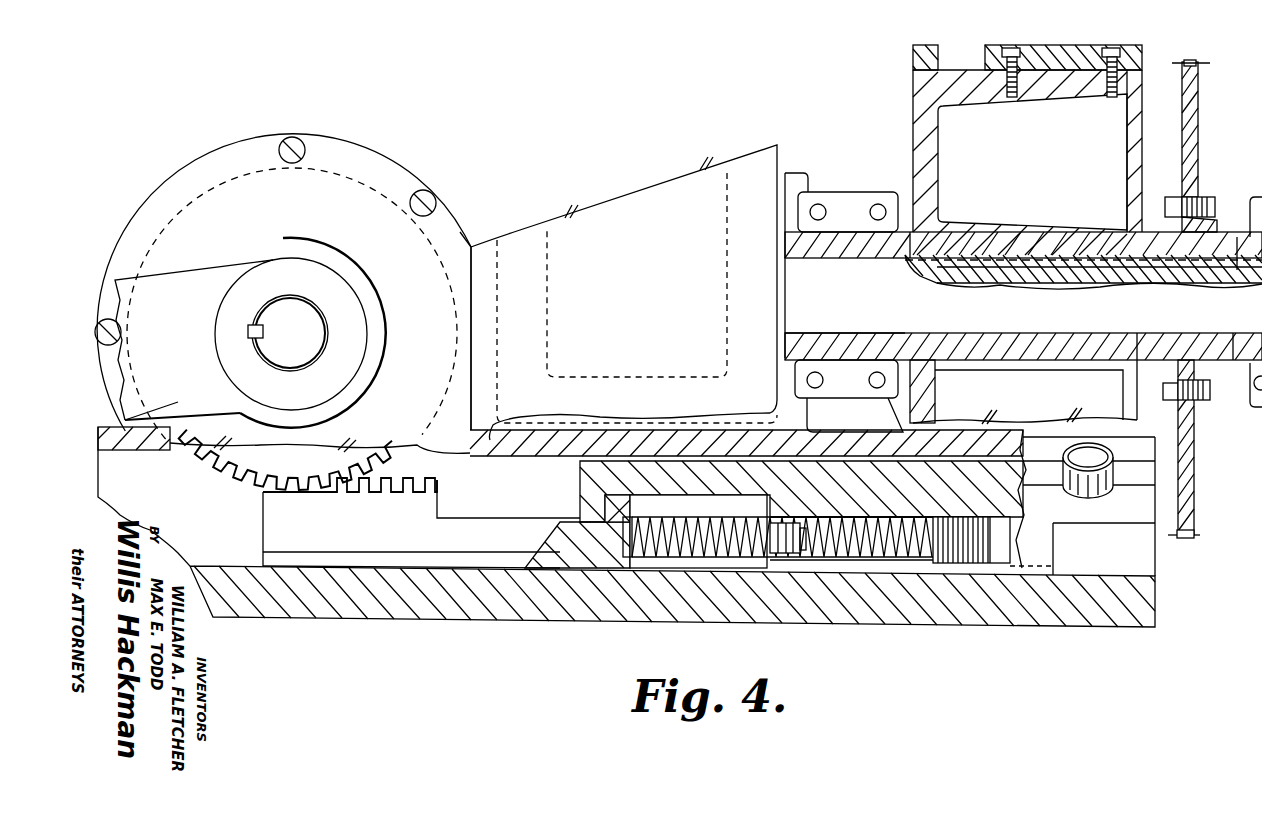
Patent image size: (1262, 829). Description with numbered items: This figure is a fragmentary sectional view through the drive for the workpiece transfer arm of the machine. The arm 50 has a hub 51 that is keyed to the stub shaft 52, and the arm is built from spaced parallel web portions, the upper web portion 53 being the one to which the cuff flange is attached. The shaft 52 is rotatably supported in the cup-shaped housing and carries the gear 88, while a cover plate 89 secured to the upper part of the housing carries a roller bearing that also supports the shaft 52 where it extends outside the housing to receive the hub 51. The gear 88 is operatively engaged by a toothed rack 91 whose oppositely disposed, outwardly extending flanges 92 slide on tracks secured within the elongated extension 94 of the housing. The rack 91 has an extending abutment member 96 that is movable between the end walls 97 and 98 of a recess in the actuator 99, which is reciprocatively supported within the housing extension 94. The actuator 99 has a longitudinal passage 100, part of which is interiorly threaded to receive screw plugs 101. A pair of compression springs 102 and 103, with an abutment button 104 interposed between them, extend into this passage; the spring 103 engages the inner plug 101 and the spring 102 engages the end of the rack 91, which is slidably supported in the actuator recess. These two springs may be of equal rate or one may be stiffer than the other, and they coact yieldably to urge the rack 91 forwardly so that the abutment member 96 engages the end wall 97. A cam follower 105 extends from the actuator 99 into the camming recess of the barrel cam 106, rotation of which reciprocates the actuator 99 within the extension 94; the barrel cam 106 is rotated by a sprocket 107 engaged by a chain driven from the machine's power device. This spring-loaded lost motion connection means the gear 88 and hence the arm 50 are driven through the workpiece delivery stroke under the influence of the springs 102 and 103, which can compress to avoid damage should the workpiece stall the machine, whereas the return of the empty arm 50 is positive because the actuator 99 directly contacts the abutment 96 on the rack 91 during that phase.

The arm 50 is at (180, 287).
The hub 51 is at (340, 373).
The stub shaft 52 is at (308, 343).
The web portion 53 is at (178, 402).
The gear 88 is at (205, 464).
The cover plate 89 is at (413, 242).
The toothed rack 91 is at (413, 510).
The flanges 92 is at (378, 557).
The elongated extension 94 is at (443, 598).
The abutment member 96 is at (605, 508).
The end wall 97 is at (603, 533).
The end wall 98 is at (773, 507).
The actuator 99 is at (583, 465).
The longitudinal passage 100 is at (857, 553).
The screw plugs 101 is at (943, 560).
The compression spring 102 is at (655, 553).
The compression spring 103 is at (823, 557).
The abutment button 104 is at (773, 545).
The cam follower 105 is at (1095, 490).
The barrel cam 106 is at (1082, 58).
The sprocket 107 is at (1190, 466).